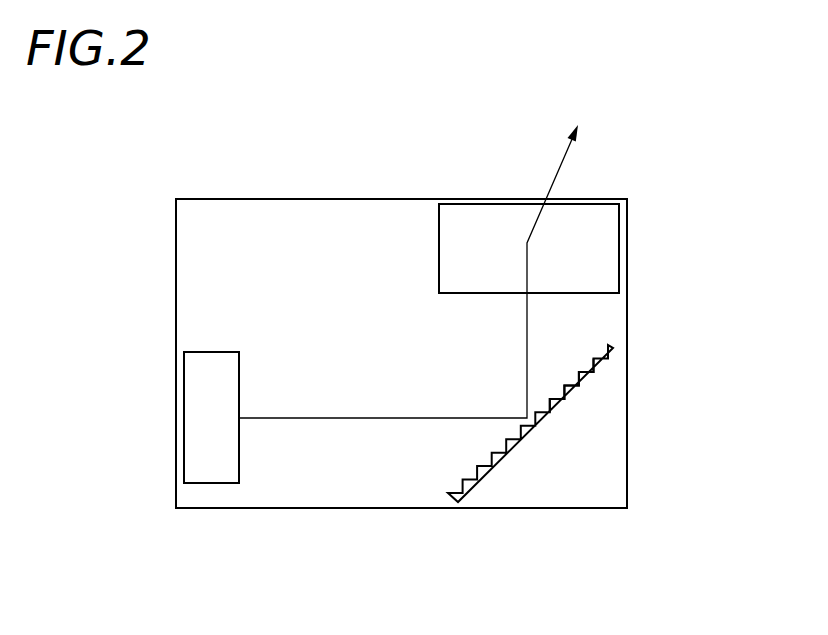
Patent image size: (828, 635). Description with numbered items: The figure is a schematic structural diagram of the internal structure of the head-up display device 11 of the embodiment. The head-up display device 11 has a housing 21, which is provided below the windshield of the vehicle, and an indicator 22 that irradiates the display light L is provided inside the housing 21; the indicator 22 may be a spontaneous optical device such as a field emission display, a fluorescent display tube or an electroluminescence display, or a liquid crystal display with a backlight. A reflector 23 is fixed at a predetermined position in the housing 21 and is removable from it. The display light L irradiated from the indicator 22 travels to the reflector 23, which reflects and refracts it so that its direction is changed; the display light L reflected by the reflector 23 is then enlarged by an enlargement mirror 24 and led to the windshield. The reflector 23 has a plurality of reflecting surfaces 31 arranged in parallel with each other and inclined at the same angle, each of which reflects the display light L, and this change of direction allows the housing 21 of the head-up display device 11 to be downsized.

The head-up display device 11 is at (252, 177).
The housing 21 is at (258, 508).
The indicator 22 is at (192, 452).
The reflector 23 is at (498, 463).
The enlargement mirror 24 is at (613, 250).
The reflecting surfaces 31 is at (552, 387).
The display light L is at (384, 417).